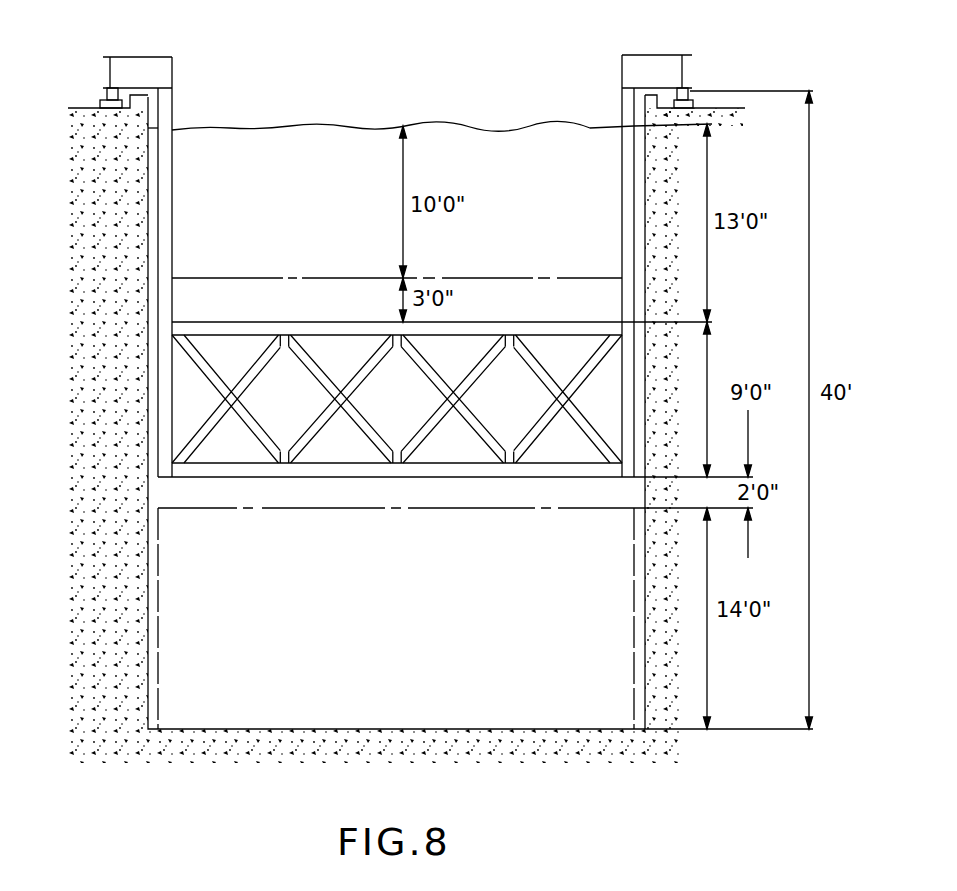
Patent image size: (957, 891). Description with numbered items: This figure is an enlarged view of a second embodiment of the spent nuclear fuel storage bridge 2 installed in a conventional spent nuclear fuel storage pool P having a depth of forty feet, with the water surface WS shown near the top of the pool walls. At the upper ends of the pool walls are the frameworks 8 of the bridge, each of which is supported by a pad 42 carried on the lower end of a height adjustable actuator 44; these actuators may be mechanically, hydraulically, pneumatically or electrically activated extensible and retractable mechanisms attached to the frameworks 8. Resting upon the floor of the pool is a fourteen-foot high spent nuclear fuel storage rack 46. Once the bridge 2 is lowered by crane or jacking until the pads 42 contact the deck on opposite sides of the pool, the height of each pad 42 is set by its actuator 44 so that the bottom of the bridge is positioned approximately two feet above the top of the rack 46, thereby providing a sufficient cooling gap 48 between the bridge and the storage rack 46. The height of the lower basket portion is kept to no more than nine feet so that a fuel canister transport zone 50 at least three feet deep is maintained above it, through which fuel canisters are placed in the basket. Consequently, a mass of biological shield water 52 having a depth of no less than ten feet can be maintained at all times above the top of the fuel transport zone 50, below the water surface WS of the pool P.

The spent nuclear fuel storage bridge 2 is at (150, 403).
The frameworks 8 is at (143, 57).
The pads 42 is at (102, 106).
The height adjustable actuators 44 is at (104, 97).
The spent nuclear fuel storage rack 46 is at (425, 612).
The cooling gap 48 is at (160, 492).
The fuel canister transport zone 50 is at (180, 306).
The biological shield water 52 is at (185, 235).
The spent nuclear fuel storage pool P is at (319, 124).
The water surface WS is at (503, 124).